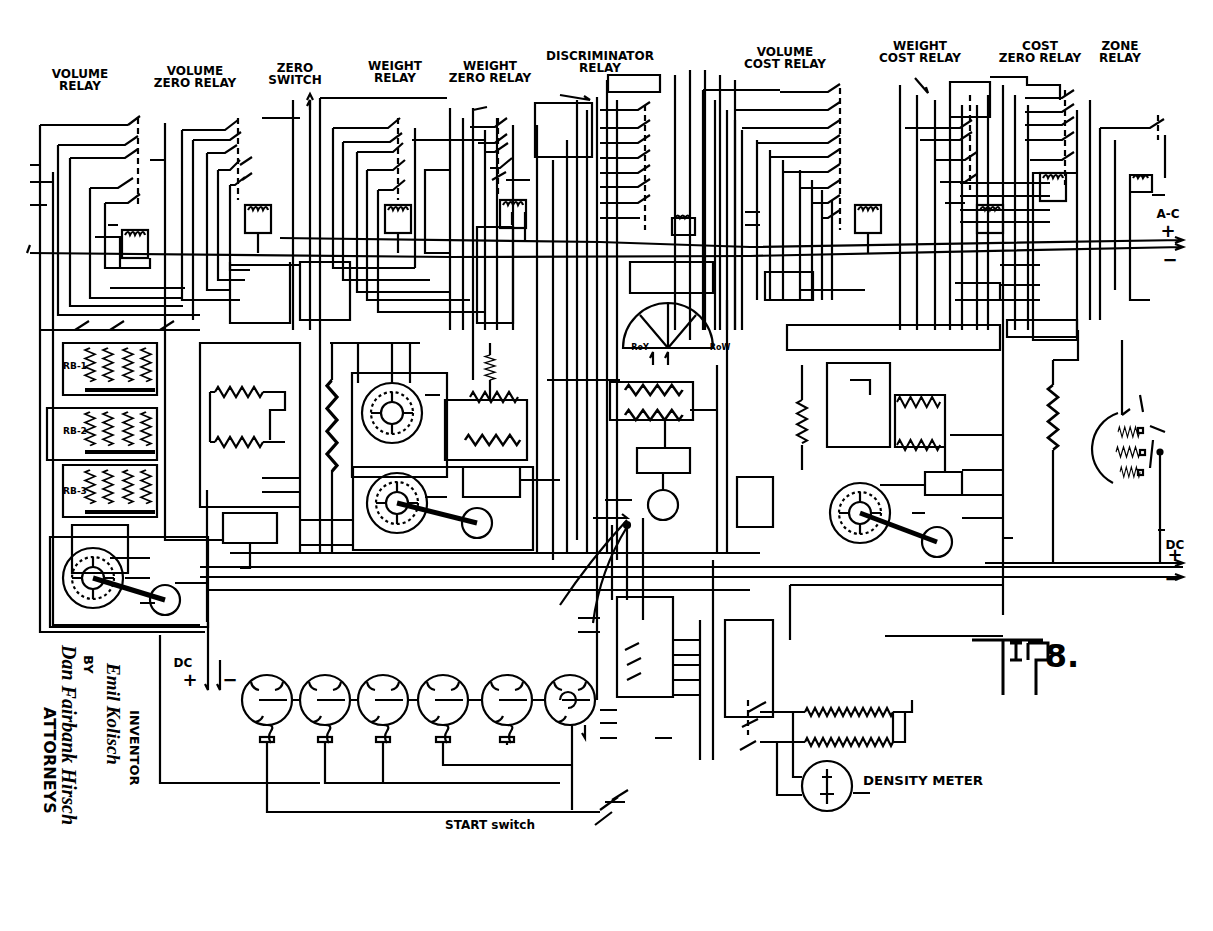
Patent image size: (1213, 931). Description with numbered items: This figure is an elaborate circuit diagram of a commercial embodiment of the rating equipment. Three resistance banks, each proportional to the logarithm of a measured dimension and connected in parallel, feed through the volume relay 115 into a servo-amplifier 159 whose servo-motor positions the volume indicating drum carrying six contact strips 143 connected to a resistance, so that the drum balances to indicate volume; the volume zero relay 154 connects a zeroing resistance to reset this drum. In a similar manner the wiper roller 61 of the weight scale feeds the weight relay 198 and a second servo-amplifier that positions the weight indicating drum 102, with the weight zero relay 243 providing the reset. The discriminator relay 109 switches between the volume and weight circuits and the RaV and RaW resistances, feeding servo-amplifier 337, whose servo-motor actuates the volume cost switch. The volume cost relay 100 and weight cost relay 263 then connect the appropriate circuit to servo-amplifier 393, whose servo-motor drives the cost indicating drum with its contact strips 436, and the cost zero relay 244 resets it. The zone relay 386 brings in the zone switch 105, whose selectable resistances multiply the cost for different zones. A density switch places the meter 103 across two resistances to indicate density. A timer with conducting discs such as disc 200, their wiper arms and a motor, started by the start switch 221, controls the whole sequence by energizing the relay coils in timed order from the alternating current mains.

The volume relay 115 is at (102, 110).
The volume zero relay 154 is at (200, 106).
The weight relay 198 is at (428, 84).
The weight zero relay 243 is at (520, 97).
The discriminator relay 109 is at (560, 87).
The volume cost relay 100 is at (835, 57).
The weight cost relay 263 is at (915, 74).
The cost zero relay 244 is at (1090, 71).
The zone relay 386 is at (1148, 91).
The meter 103 is at (882, 801).
The contact strips 143 is at (72, 544).
The wiper roller 61 is at (360, 384).
The weight indicating drum 102 is at (412, 467).
The contact strips 436 is at (820, 479).
The disc 200 is at (258, 659).
The start switch 221 is at (565, 825).
The zone switch 105 is at (1142, 389).
The servo-amplifier 337 is at (663, 459).
The servo-amplifier 159 is at (228, 494).
The servo-amplifier 393 is at (937, 454).